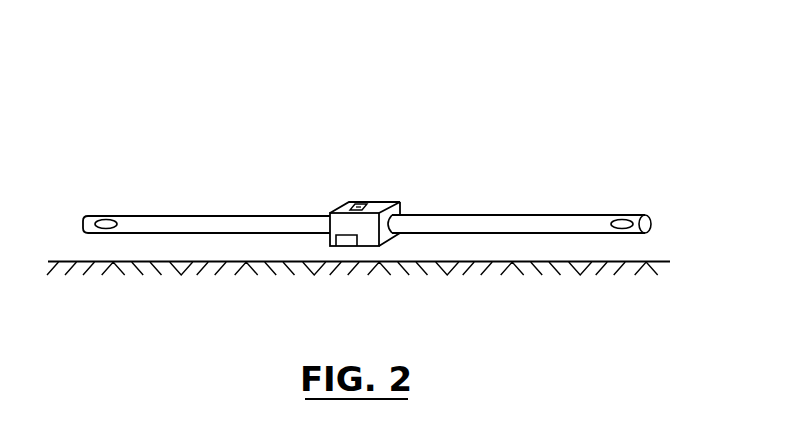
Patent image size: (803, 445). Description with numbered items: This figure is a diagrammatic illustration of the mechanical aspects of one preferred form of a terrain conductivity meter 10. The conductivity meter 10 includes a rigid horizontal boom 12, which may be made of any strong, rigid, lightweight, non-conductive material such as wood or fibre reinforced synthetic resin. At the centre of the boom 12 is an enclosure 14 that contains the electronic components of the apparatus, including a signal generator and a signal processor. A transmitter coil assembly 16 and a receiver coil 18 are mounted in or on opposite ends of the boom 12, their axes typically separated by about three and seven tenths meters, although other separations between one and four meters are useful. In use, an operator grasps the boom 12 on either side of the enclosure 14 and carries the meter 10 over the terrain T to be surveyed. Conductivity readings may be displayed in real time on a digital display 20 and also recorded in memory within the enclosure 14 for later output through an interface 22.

The terrain conductivity meter 10 is at (481, 105).
The rigid horizontal boom 12 is at (495, 216).
The enclosure 14 is at (383, 201).
The transmitter coil assembly 16 is at (106, 220).
The receiver coil 18 is at (622, 220).
The digital display 20 is at (358, 204).
The interface 22 is at (343, 241).
The terrain T is at (660, 261).